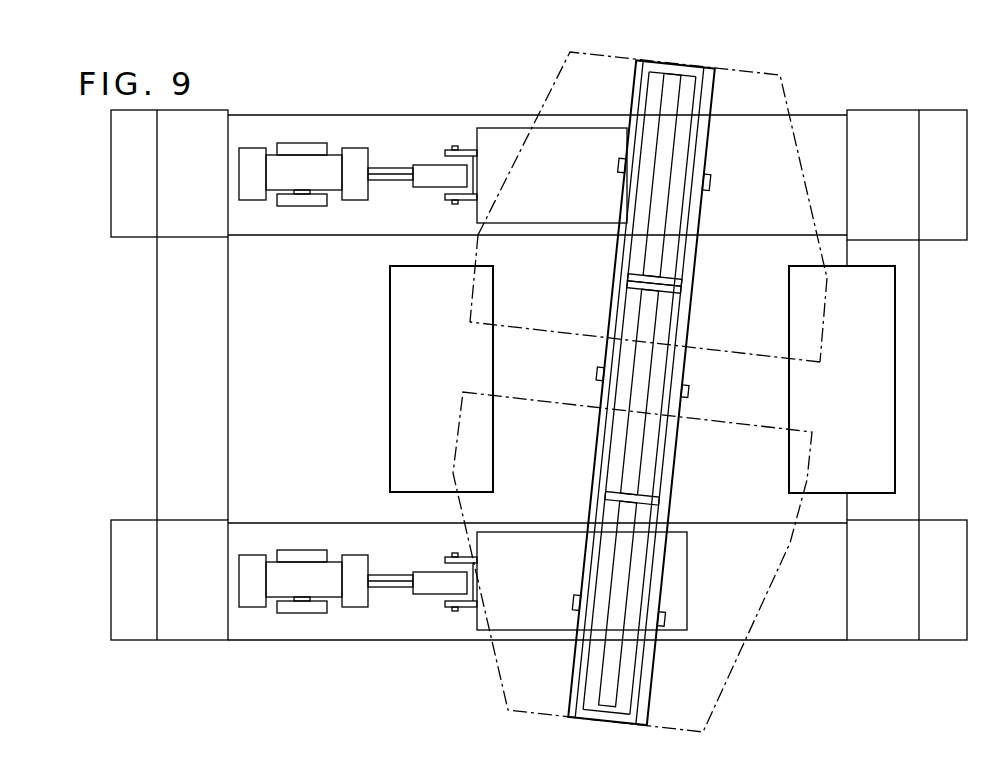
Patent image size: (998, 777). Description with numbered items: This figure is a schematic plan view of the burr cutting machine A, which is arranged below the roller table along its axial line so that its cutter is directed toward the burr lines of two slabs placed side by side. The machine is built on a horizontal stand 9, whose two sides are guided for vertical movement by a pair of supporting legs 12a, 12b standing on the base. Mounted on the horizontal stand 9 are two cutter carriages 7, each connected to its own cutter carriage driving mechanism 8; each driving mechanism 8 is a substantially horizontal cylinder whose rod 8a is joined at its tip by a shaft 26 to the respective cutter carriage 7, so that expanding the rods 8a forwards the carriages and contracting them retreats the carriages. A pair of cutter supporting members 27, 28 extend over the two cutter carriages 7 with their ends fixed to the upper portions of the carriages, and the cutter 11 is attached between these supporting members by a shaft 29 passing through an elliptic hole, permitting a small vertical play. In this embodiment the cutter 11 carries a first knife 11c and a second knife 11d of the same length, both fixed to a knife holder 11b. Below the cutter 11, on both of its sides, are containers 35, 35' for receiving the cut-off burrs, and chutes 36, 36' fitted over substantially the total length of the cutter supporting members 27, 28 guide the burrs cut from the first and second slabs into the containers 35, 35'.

The horizontal stand 9 is at (426, 112).
The supporting leg 12a is at (903, 113).
The supporting leg 12b is at (215, 113).
The cutter carriage 7 is at (510, 130).
The cutter carriage driving mechanism 8 is at (331, 162).
The rod 8a is at (398, 168).
The shaft 26 is at (457, 150).
The burr cutting machine A is at (808, 100).
The cutter 11 is at (668, 126).
The knife holder 11b is at (667, 165).
The first knife 11c is at (680, 200).
The second knife 11d is at (638, 205).
The shaft 29 is at (713, 177).
The cutter supporting member 27 is at (690, 272).
The cutter supporting member 28 is at (621, 284).
The container 35 is at (873, 379).
The container 35' is at (418, 379).
The chute 36 is at (843, 320).
The chute 36' is at (451, 278).